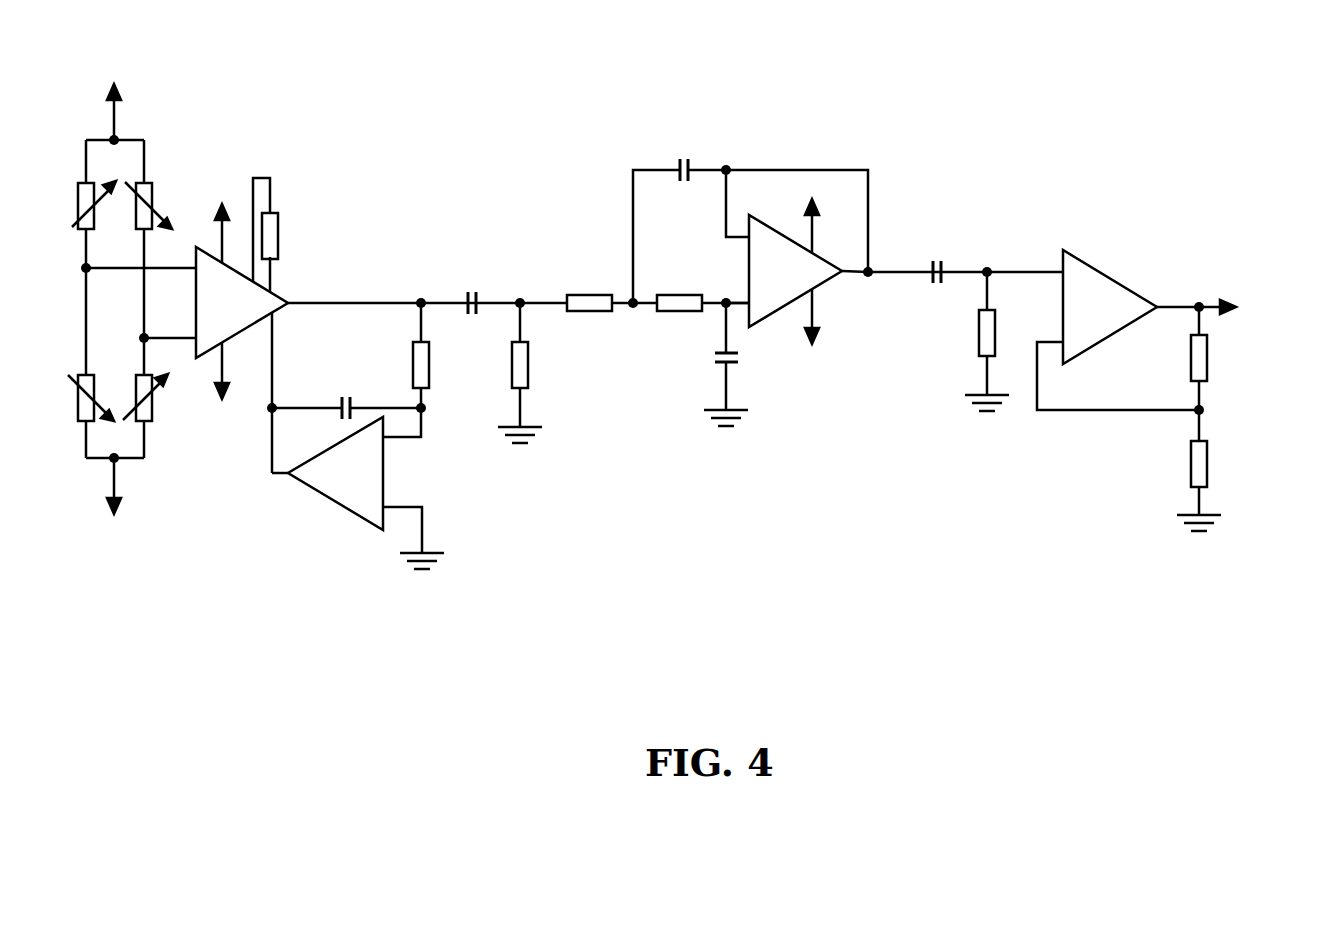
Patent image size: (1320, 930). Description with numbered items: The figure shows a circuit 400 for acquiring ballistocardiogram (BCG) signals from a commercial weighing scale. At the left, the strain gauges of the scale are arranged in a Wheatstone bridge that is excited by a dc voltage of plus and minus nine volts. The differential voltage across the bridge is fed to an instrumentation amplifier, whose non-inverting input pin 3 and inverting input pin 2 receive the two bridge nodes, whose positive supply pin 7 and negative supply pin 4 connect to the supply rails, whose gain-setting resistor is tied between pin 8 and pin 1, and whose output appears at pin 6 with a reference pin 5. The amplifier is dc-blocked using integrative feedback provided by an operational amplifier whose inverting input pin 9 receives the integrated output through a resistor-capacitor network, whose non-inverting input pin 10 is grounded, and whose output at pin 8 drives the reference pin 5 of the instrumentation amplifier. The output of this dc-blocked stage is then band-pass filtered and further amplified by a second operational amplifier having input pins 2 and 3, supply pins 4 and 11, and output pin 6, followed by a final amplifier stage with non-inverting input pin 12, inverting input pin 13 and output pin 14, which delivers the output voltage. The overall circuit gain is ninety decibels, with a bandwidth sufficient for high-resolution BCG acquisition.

The circuit 400 is at (1097, 40).
The LT1167 pin 1 (gain resistor terminal) 1 is at (278, 274).
The inverting input pin 2 is at (446, 269).
The non-inverting input pin 3 is at (417, 274).
The power supply pin 4 is at (518, 300).
The LT1167 reference pin 5 is at (280, 392).
The output pin 6 is at (578, 287).
The LT1167 positive supply pin 7 is at (224, 223).
The gain resistor / input pin 8 is at (261, 342).
The LT1014C inverting input pin 9 is at (402, 438).
The LT1014C non-inverting input pin 10 is at (413, 525).
The LT1014A negative supply pin 11 is at (806, 331).
The LT1014D non-inverting input pin 12 is at (1025, 258).
The LT1014D inverting input pin 13 is at (1116, 363).
The LT1014D output pin 14 is at (1219, 304).